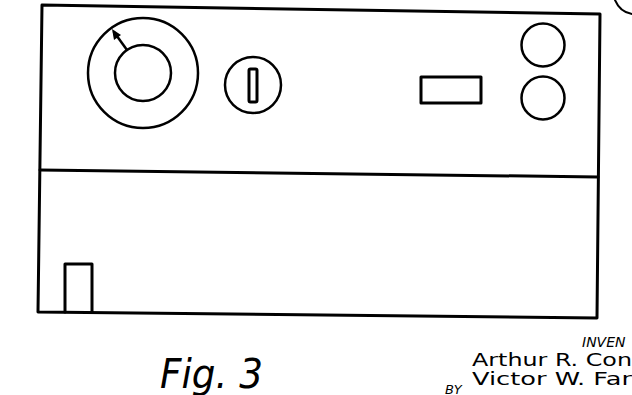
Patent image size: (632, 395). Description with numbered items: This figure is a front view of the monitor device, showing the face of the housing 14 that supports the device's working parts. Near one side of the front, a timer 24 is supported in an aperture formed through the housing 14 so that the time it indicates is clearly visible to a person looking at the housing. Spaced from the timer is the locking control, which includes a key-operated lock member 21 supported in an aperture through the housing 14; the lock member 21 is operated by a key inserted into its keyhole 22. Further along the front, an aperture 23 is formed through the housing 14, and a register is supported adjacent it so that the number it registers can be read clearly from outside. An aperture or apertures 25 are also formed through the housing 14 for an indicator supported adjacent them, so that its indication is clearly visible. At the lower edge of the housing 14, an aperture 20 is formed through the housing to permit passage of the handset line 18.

The housing 14 is at (360, 137).
The handset line 18 is at (72, 1).
The aperture 20 is at (80, 300).
The key-operated lock member 21 is at (268, 74).
The keyhole 22 is at (253, 103).
The aperture 23 is at (441, 93).
The timer 24 is at (104, 78).
The apertures 25 is at (535, 53).